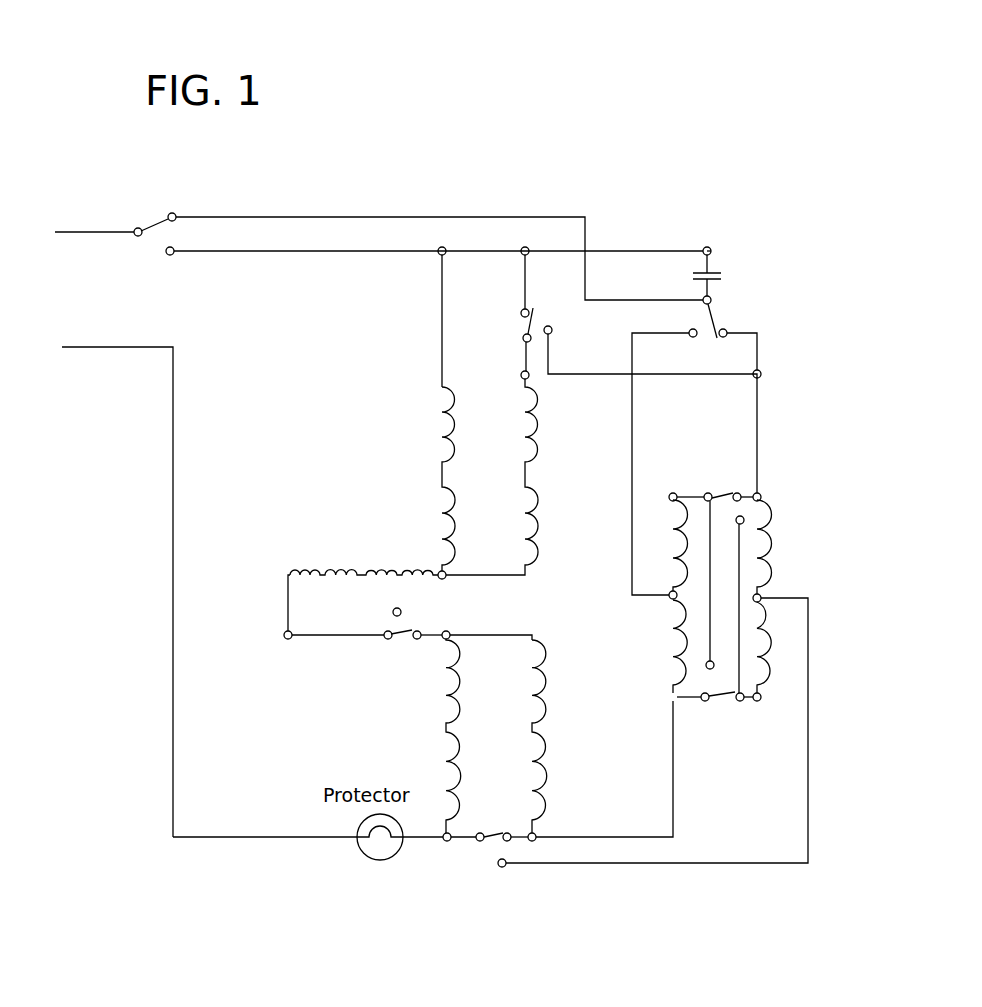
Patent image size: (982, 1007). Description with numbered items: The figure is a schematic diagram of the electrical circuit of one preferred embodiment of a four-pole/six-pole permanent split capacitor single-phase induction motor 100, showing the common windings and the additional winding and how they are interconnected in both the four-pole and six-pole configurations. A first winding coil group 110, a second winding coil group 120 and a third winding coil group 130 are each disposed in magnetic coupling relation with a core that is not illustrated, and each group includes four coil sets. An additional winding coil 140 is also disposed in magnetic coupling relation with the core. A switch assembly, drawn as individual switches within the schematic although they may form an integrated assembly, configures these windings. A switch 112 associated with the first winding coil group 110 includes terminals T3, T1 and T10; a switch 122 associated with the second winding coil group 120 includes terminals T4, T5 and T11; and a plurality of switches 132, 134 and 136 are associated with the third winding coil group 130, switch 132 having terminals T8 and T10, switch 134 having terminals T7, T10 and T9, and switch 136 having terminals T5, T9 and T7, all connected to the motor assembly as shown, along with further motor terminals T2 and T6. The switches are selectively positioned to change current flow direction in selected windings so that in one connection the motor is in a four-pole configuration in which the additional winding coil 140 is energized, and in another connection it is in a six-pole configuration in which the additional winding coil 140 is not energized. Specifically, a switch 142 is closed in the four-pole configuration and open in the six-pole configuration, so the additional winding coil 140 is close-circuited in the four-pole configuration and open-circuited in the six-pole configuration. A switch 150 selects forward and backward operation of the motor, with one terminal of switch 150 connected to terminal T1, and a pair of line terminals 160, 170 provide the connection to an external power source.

The 4-pole/6-pole permanent split capacitor single-phase induction motor 100 is at (319, 368).
The first winding coil group 110 is at (512, 481).
The switch 112 is at (522, 336).
The second winding coil group 120 is at (515, 701).
The switch 122 is at (496, 812).
The third winding coil group 130 is at (866, 539).
The switch 132 is at (730, 296).
The switch 134 is at (693, 458).
The switch 136 is at (719, 725).
The additional winding coil 140 is at (344, 556).
The switch 142 is at (410, 665).
The switch 150 is at (148, 215).
The line terminal 160 is at (93, 233).
The line terminal 170 is at (77, 347).
The terminal T1 is at (440, 255).
The terminal T2 is at (291, 638).
The terminal T3 is at (529, 377).
The terminal T4 is at (446, 842).
The terminal T5 is at (536, 834).
The terminal T6 is at (449, 632).
The terminal T7 is at (671, 494).
The terminal T8 is at (670, 598).
The terminal T9 is at (761, 700).
The terminal T10 is at (759, 493).
The terminal T11 is at (761, 596).